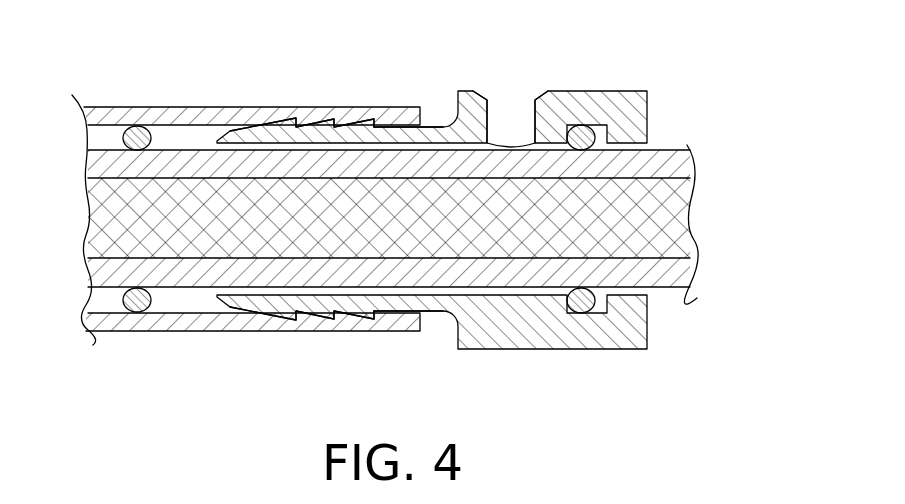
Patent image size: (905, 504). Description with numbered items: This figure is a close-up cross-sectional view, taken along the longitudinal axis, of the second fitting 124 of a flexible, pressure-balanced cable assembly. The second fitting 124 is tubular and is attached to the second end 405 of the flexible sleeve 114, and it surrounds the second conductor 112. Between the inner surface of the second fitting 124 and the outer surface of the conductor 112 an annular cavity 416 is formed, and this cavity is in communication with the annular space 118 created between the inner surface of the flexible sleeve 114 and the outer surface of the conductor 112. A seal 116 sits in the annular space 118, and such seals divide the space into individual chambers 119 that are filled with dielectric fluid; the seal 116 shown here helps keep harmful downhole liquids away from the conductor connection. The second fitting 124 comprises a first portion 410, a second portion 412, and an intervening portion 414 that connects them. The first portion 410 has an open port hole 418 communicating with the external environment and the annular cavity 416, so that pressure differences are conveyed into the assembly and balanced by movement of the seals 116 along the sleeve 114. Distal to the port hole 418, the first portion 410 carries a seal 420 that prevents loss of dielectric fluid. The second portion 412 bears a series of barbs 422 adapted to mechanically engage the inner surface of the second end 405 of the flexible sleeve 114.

The second conductor 112 is at (63, 150).
The flexible sleeve 114 is at (220, 107).
The seal 116 is at (137, 139).
The annular space 118 is at (193, 137).
The individual chamber 119 is at (101, 137).
The second fitting 124 is at (738, 82).
The second end of the flexible sleeve 405 is at (420, 117).
The first portion 410 is at (643, 378).
The second portion 412 is at (225, 378).
The intervening portion 414 is at (457, 378).
The annular cavity 416 is at (402, 128).
The port hole 418 is at (510, 90).
The seal 420 is at (583, 125).
The barbs 422 is at (358, 317).